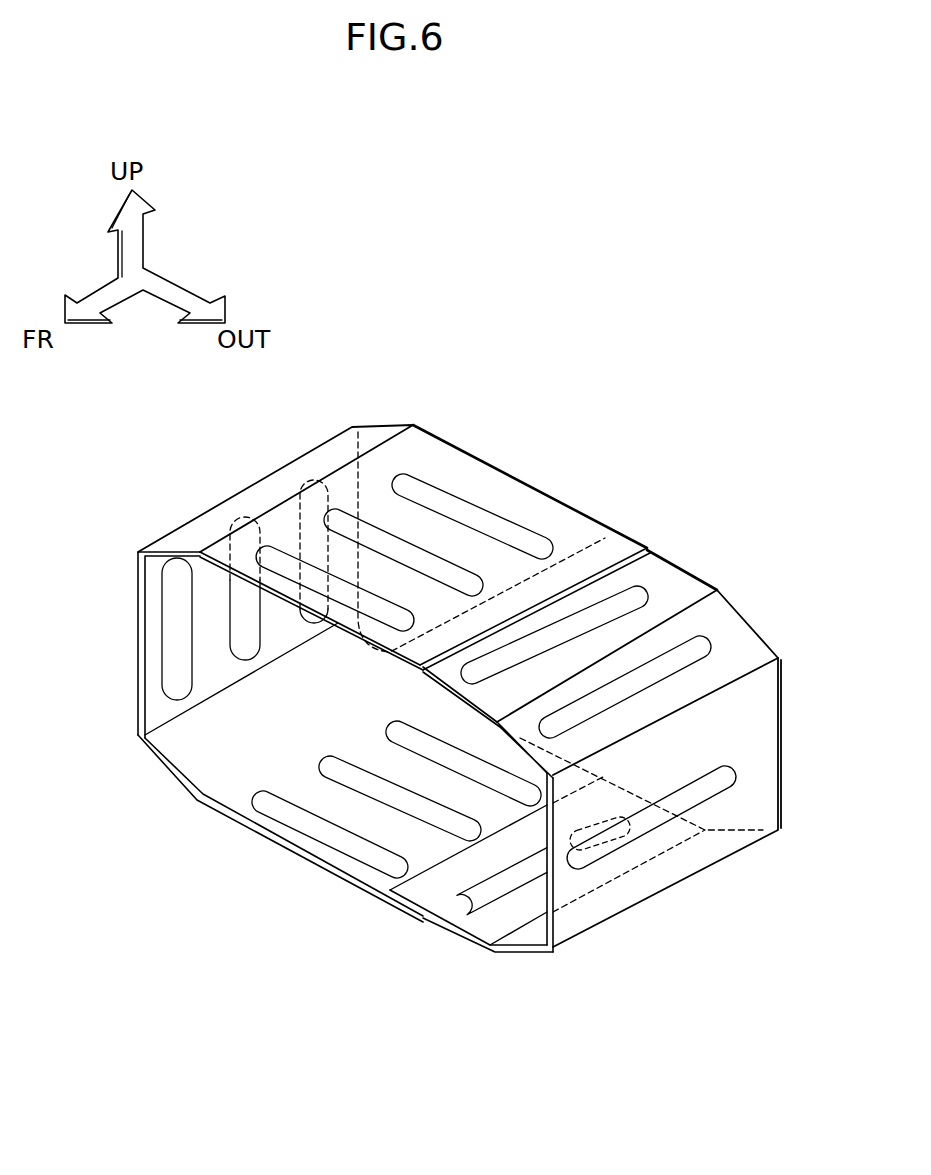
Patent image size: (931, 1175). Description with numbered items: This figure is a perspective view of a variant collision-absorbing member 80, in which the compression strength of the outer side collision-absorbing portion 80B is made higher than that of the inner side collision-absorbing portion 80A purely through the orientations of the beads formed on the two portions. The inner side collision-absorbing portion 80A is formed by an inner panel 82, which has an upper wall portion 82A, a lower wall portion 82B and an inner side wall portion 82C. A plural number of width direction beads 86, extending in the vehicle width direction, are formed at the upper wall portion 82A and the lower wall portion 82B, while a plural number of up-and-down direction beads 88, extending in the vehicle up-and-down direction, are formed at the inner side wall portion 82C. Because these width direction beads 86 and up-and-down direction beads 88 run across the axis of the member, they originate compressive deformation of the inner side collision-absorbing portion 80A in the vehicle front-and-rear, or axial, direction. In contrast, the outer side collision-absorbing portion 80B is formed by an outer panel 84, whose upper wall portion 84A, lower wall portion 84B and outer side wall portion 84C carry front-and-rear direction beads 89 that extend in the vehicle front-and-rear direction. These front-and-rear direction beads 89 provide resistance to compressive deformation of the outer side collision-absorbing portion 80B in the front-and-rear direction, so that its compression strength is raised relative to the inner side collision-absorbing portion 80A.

The collision-absorbing member 80 is at (422, 719).
The inner side collision-absorbing portion 80A is at (313, 862).
The outer side collision-absorbing portion 80B is at (452, 918).
The inner panel 82 is at (344, 669).
The upper wall portion 82A is at (513, 498).
The lower wall portion 82B is at (250, 828).
The inner side wall portion 82C is at (138, 662).
The outer panel 84 is at (598, 756).
The upper wall portion 84A is at (687, 588).
The lower wall portion 84B is at (523, 915).
The outer side wall portion 84C is at (612, 902).
The width direction beads 86 is at (412, 553).
The up-and-down direction beads 88 is at (250, 645).
The front-and-rear direction beads 89 is at (630, 597).